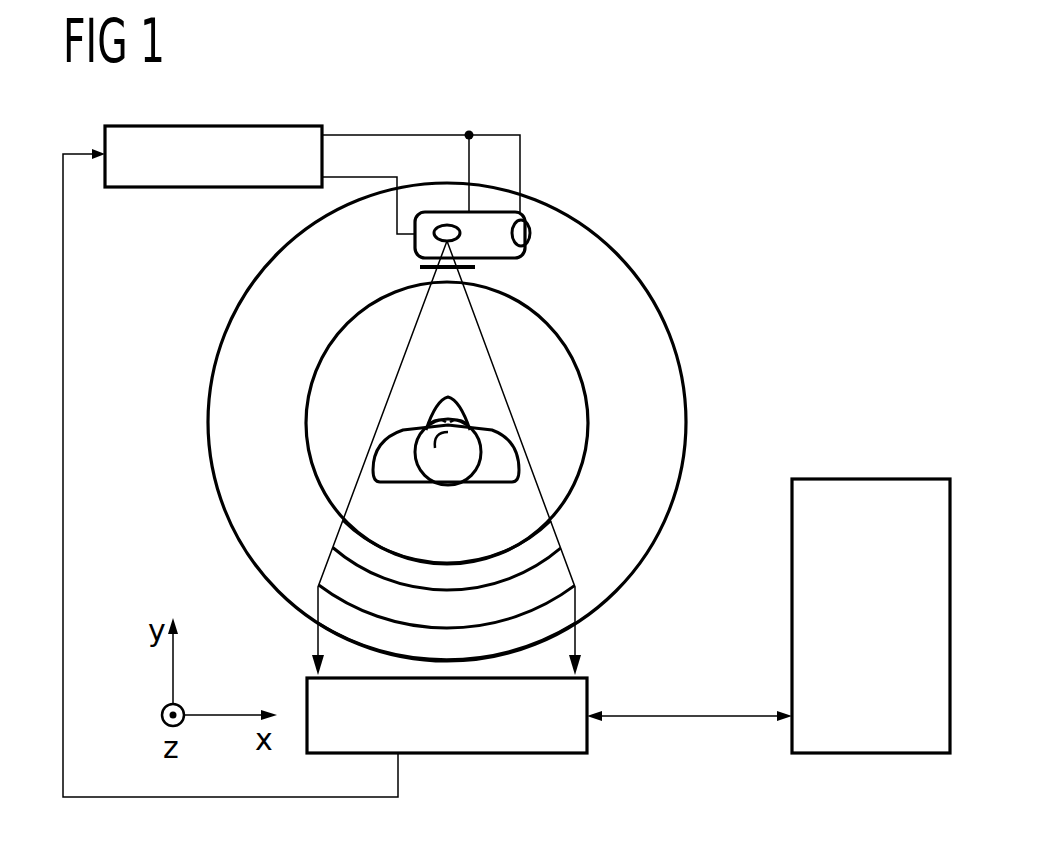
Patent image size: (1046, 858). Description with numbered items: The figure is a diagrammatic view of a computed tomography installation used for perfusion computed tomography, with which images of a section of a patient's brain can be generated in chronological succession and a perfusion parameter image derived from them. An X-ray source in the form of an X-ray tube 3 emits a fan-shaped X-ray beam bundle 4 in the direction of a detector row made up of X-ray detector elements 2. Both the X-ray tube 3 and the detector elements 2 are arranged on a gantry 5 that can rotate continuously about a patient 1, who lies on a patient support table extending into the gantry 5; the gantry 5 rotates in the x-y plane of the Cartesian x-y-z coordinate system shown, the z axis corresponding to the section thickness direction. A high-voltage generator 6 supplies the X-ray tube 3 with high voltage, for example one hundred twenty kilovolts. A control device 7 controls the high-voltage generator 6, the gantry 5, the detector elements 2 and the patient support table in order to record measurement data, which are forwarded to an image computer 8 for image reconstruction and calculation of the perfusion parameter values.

The patient 1 is at (402, 463).
The X-ray detector elements 2 is at (562, 570).
The X-ray tube 3 is at (530, 237).
The fan-shaped X-ray beam bundle 4 is at (488, 372).
The gantry 5 is at (214, 420).
The high-voltage generator 6 is at (213, 188).
The control device 7 is at (445, 755).
The image computer 8 is at (870, 479).